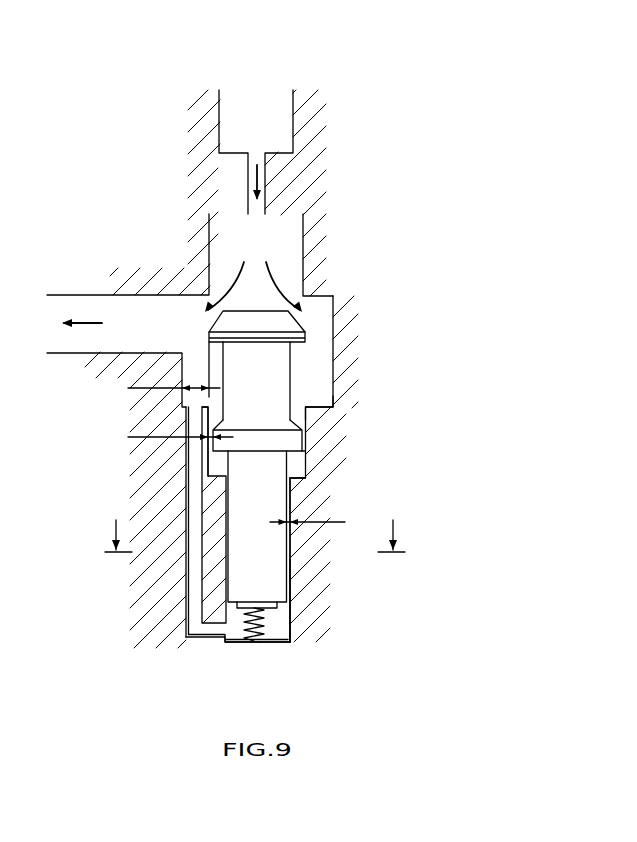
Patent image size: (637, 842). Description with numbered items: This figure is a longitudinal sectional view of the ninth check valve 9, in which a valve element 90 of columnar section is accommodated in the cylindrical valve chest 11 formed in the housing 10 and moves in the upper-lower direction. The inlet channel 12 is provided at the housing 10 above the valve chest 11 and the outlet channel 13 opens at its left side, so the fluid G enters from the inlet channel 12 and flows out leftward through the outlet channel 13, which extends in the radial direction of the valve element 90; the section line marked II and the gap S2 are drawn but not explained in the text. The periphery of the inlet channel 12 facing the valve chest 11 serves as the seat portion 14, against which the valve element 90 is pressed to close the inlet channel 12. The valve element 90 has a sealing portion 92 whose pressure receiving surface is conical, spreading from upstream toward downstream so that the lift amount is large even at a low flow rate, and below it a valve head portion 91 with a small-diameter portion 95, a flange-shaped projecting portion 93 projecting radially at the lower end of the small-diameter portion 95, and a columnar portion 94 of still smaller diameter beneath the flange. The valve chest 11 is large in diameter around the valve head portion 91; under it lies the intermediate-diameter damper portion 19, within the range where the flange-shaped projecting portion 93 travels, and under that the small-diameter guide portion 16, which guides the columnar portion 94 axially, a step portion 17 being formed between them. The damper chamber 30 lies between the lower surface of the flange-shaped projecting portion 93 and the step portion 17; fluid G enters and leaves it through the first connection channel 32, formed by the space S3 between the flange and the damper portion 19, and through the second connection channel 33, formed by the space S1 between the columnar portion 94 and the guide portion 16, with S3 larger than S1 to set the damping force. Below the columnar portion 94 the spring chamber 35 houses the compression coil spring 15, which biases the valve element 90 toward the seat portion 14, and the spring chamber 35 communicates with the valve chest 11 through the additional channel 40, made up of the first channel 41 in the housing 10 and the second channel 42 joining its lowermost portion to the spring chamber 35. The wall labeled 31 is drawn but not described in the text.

The ninth check valve 9 is at (446, 242).
The housing 10 is at (389, 434).
The valve chest 11 is at (297, 367).
The inlet channel 12 is at (273, 252).
The outlet channel 13 is at (135, 312).
The seat portion 14 is at (291, 286).
The spring 15 is at (251, 643).
The guide portion 16 is at (282, 642).
The step portion 17 is at (205, 468).
The damper portion 19 is at (305, 407).
The damper chamber 30 is at (306, 478).
The housing wall 31 is at (290, 578).
The first connection channel 32 is at (293, 463).
The second connection channel 33 is at (215, 578).
The spring chamber 35 is at (268, 620).
The additional channel 40 is at (171, 544).
The first channel 41 is at (185, 605).
The second channel 42 is at (205, 645).
The valve element 90 is at (282, 566).
The valve head portion 91 is at (306, 337).
The sealing portion 92 is at (302, 315).
The flange-shaped projecting portion 93 is at (302, 446).
The columnar portion 94 is at (265, 540).
The small-diameter portion 95 is at (290, 378).
The fluid G is at (228, 296).
The space S1 is at (322, 522).
The gap S2 is at (159, 388).
The space S3 is at (165, 437).
The section line II is at (253, 534).